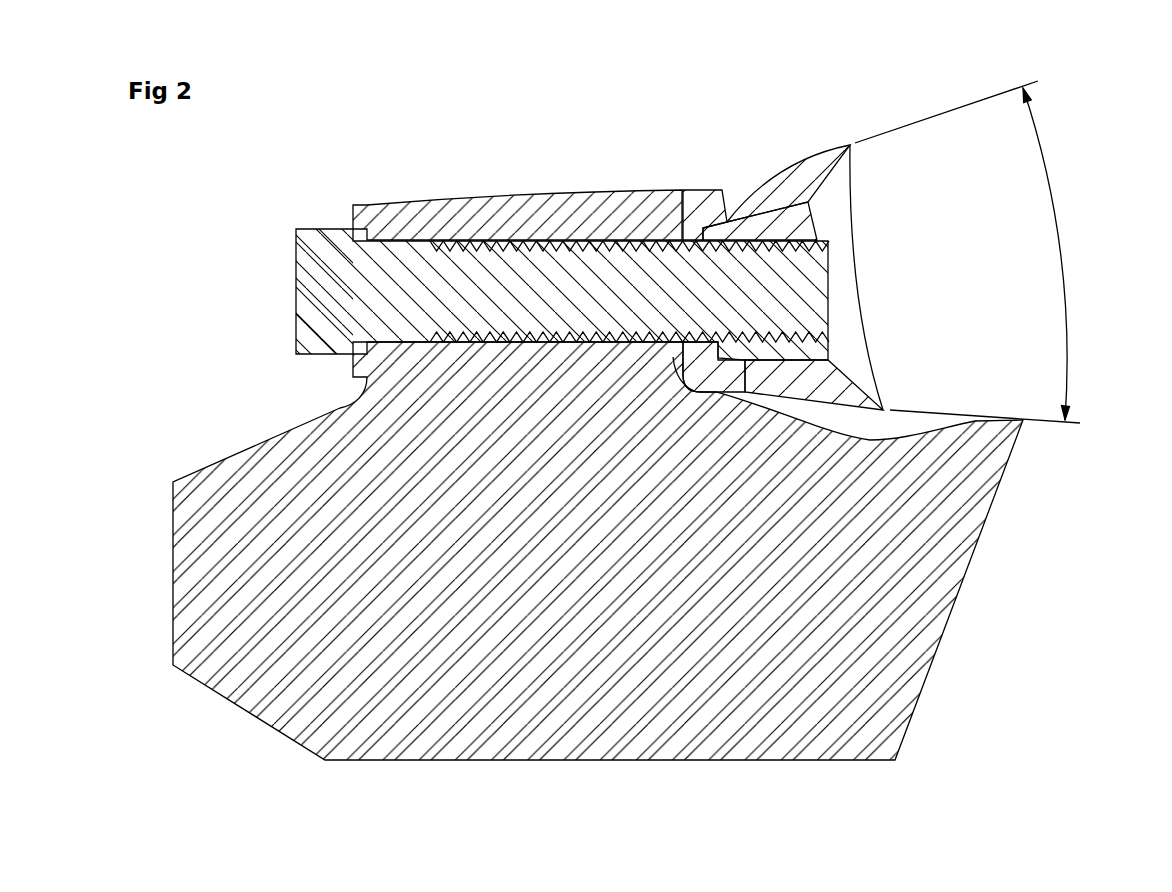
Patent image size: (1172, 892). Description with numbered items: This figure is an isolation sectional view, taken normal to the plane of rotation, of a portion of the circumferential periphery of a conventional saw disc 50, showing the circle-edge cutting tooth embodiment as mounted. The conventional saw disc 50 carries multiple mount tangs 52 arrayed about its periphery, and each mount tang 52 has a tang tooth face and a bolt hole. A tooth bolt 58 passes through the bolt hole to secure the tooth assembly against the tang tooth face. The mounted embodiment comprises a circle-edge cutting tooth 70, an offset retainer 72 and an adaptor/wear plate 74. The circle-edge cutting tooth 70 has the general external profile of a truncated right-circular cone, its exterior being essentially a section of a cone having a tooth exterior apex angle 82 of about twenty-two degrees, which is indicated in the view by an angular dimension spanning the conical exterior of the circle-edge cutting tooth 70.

The conventional saw disc 50 is at (522, 764).
The mount tang 52 is at (447, 202).
The tooth bolt 58 is at (296, 262).
The circle-edge cutting tooth 70 is at (848, 145).
The offset retainer 72 is at (758, 230).
The adaptor/wear plate 74 is at (697, 190).
The tooth exterior apex angle 82 is at (1062, 252).